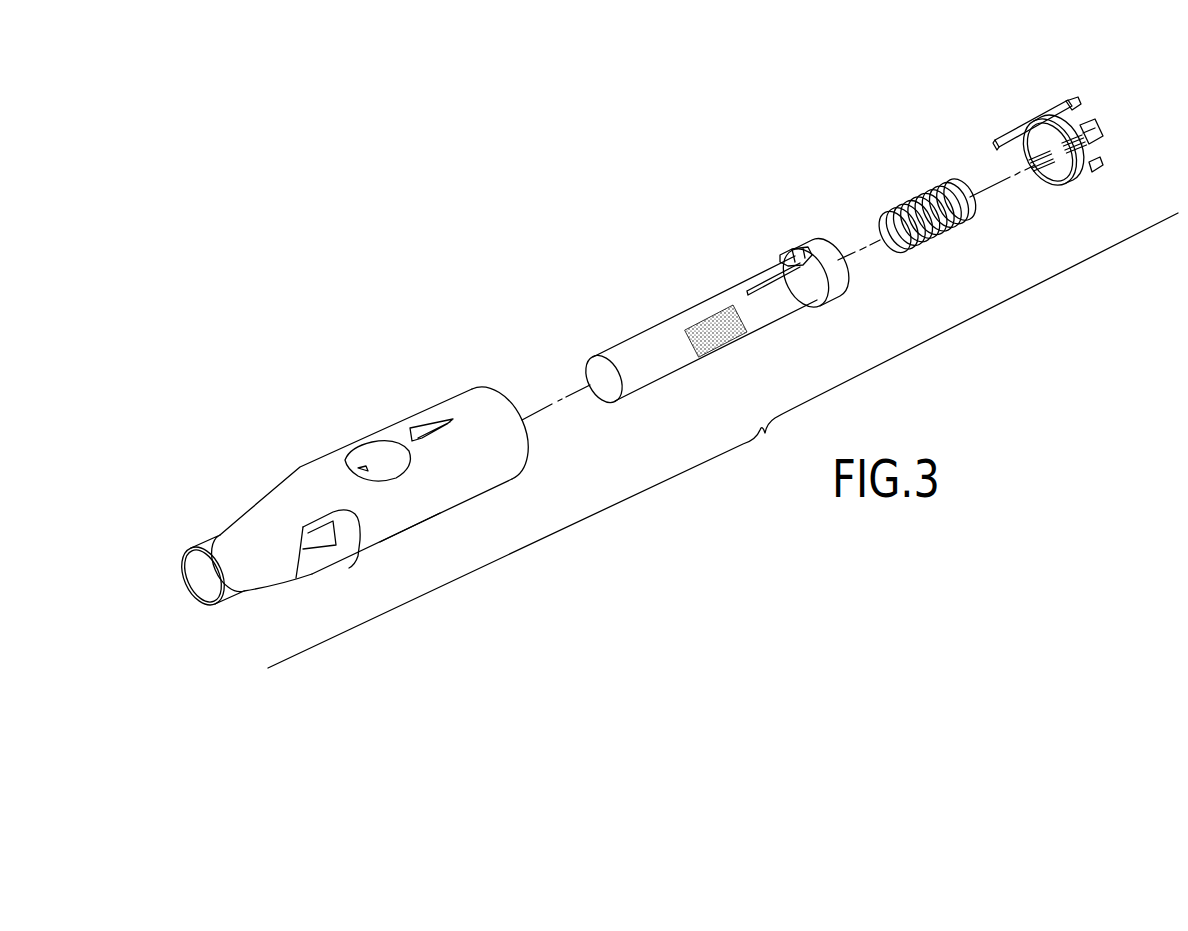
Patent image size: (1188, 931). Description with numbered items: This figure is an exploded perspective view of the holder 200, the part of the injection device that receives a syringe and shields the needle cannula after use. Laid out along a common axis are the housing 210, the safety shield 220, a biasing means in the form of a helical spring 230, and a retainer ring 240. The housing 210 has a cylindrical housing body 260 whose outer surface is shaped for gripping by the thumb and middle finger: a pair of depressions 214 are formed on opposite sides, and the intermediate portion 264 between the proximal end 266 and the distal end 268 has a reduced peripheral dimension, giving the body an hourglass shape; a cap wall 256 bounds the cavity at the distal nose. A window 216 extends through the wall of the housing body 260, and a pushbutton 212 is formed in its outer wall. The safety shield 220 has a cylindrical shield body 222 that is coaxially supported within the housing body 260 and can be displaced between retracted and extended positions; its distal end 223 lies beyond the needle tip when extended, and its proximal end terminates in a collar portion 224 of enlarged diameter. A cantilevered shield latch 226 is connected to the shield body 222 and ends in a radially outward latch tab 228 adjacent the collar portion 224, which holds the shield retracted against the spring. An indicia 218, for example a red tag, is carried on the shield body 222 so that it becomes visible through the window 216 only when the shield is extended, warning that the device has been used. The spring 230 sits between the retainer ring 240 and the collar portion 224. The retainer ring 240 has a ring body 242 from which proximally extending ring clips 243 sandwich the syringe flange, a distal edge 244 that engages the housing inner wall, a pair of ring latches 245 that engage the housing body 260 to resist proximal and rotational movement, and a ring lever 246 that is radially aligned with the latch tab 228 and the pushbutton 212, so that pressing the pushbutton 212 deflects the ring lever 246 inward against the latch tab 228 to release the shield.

The holder 200 is at (723, 440).
The housing 210 is at (345, 502).
The pushbutton 212 is at (413, 428).
The depressions 214 is at (377, 455).
The window 216 is at (320, 534).
The indicia 218 is at (737, 347).
The safety shield 220 is at (733, 323).
The shield body 222 is at (650, 358).
The distal end 223 is at (607, 400).
The collar portion 224 is at (828, 306).
The shield latch 226 is at (762, 278).
The latch tab 228 is at (782, 253).
The helical spring 230 is at (900, 203).
The retainer ring 240 is at (1064, 148).
The ring body 242 is at (1016, 101).
The ring clips 243 is at (1077, 106).
The distal edge 244 is at (1054, 190).
The ring latches 245 is at (1046, 160).
The ring lever 246 is at (1008, 137).
The cap wall 256 is at (287, 592).
The housing body 260 is at (443, 512).
The intermediate portion 264 is at (410, 527).
The proximal end 266 is at (514, 413).
The distal end 268 is at (188, 586).